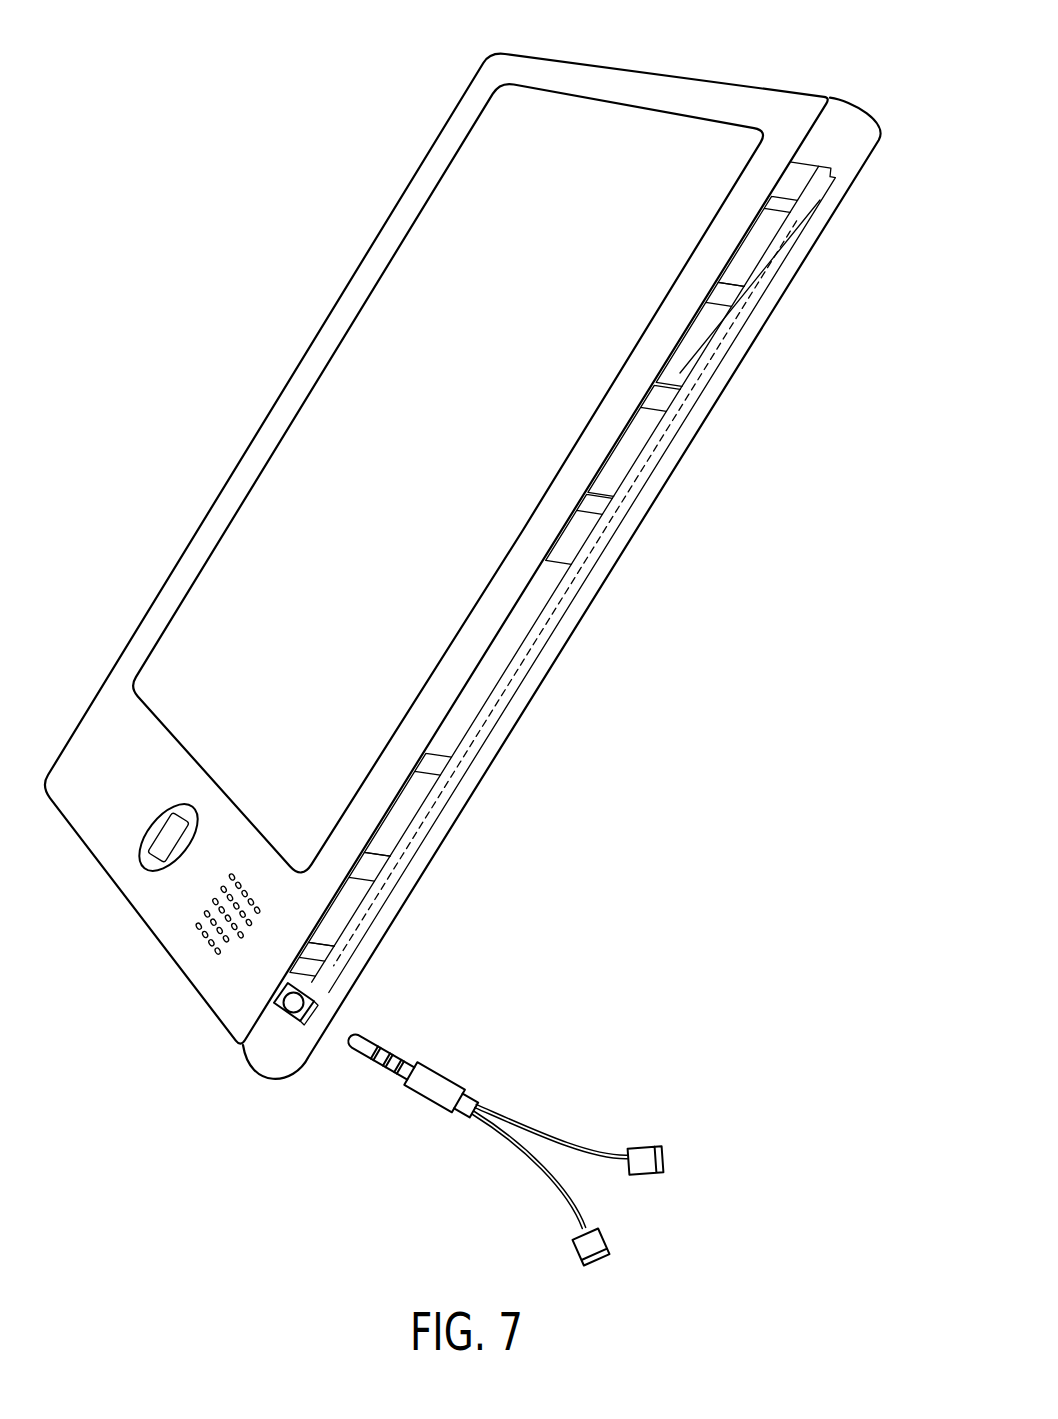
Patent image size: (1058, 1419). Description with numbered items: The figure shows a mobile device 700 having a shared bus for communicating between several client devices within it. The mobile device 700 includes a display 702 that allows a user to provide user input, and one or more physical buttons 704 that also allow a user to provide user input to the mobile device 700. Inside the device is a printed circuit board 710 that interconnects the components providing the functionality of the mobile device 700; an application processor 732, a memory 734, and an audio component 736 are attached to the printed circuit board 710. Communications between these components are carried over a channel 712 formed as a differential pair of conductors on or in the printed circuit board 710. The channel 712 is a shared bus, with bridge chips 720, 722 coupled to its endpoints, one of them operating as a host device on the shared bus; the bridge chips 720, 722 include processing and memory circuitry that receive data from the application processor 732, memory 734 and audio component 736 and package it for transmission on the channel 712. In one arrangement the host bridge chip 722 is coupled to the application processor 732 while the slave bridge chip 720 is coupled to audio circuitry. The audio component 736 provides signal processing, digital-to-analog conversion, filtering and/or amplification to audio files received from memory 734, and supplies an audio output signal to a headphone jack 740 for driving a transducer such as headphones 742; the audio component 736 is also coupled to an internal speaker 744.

The mobile device 700 is at (722, 80).
The display 702 is at (600, 100).
The physical button 704 is at (145, 868).
The printed circuit board 710 is at (833, 188).
The channel 712 is at (562, 615).
The bridge chip 720 is at (345, 924).
The bridge chip 722 is at (778, 234).
The application processor 732 is at (705, 352).
The memory 734 is at (638, 460).
The audio component 736 is at (416, 809).
The headphone jack 740 is at (302, 1021).
The headphones 742 is at (428, 1105).
The internal speaker 744 is at (208, 953).